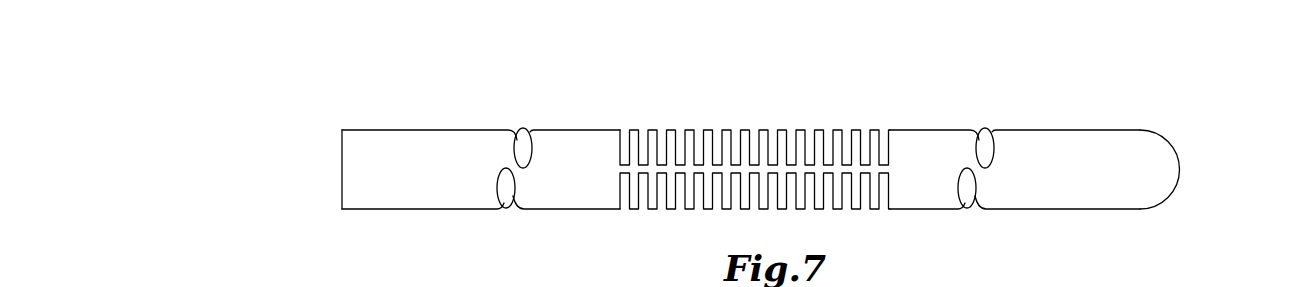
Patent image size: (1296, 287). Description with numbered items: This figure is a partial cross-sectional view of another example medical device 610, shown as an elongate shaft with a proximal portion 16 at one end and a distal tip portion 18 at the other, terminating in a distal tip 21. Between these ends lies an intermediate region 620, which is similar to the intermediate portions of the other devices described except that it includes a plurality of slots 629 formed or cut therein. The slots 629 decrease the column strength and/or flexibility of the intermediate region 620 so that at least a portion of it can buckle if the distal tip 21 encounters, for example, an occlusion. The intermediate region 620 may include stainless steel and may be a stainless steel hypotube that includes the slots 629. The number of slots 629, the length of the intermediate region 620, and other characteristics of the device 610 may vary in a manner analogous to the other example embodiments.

The proximal portion 16 is at (382, 165).
The medical device 610 is at (563, 82).
The slots 629 is at (713, 145).
The intermediate region 620 is at (764, 123).
The distal tip portion 18 is at (1033, 166).
The distal tip 21 is at (1178, 170).